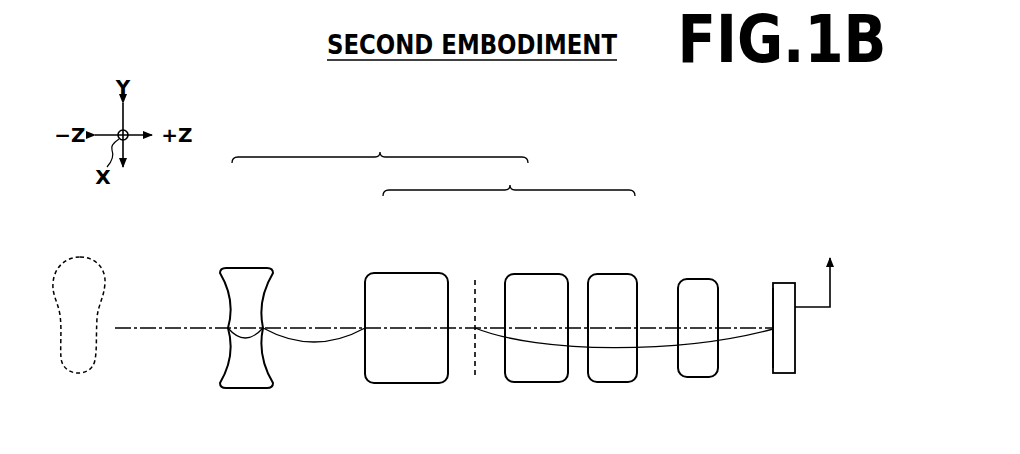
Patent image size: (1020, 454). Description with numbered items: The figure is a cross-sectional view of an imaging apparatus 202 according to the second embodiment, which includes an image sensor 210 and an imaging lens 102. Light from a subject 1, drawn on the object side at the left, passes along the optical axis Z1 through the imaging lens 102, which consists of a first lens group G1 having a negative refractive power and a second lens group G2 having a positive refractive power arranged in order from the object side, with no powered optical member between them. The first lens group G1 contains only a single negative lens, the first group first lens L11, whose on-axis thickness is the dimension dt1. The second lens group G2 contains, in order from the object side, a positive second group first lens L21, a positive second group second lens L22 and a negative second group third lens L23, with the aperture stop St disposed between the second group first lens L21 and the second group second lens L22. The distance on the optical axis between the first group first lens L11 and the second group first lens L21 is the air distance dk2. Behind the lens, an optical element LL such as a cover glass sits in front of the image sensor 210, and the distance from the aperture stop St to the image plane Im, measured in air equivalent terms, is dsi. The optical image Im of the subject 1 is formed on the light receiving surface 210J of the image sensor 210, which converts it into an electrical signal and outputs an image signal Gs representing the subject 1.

The subject 1 is at (76, 262).
The imaging lens 102 is at (380, 145).
The imaging apparatus 202 is at (764, 131).
The image sensor 210 is at (797, 352).
The light receiving surface 210J is at (773, 290).
The optical axis Z1 is at (163, 326).
The first lens group G1 is at (250, 222).
The second lens group G2 is at (501, 272).
The first group first lens L11 is at (251, 280).
The second group first lens L21 is at (407, 278).
The second group second lens L22 is at (537, 278).
The second group third lens L23 is at (614, 280).
The optical element LL is at (700, 285).
The aperture stop St is at (474, 285).
The image plane Im is at (773, 372).
The image signal Gs is at (830, 284).
The thickness of the first group first lens dt1 is at (245, 340).
The distance between the first group first lens and the second group first lens dk2 is at (312, 343).
The distance between the aperture stop and the image plane dsi is at (655, 348).